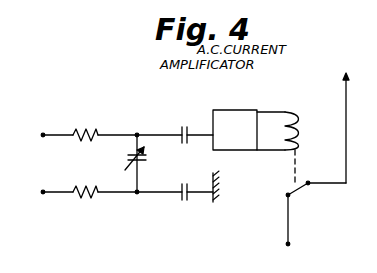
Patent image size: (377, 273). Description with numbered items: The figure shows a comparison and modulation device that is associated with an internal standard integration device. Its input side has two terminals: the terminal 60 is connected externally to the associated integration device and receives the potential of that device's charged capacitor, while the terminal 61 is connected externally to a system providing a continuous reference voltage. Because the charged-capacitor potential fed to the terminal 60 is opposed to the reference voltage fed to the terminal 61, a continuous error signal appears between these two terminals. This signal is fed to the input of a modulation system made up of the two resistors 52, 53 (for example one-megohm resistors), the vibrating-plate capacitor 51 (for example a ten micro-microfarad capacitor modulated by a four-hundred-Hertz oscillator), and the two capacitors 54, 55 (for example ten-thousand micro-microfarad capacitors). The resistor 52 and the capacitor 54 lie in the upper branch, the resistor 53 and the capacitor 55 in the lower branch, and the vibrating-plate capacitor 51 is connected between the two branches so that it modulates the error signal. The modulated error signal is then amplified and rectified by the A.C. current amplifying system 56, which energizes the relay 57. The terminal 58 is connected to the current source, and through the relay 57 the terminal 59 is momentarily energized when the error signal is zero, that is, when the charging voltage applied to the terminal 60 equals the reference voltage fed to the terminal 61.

The vibrating-plate capacitor 51 is at (147, 163).
The resistor 52 is at (75, 132).
The resistor 53 is at (79, 197).
The capacitor 54 is at (179, 130).
The capacitor 55 is at (186, 199).
The A.C. current amplifying system 56 is at (265, 70).
The relay 57 is at (298, 110).
The terminal 58 is at (345, 72).
The terminal 59 is at (289, 245).
The terminal 60 is at (43, 135).
The terminal 61 is at (43, 194).